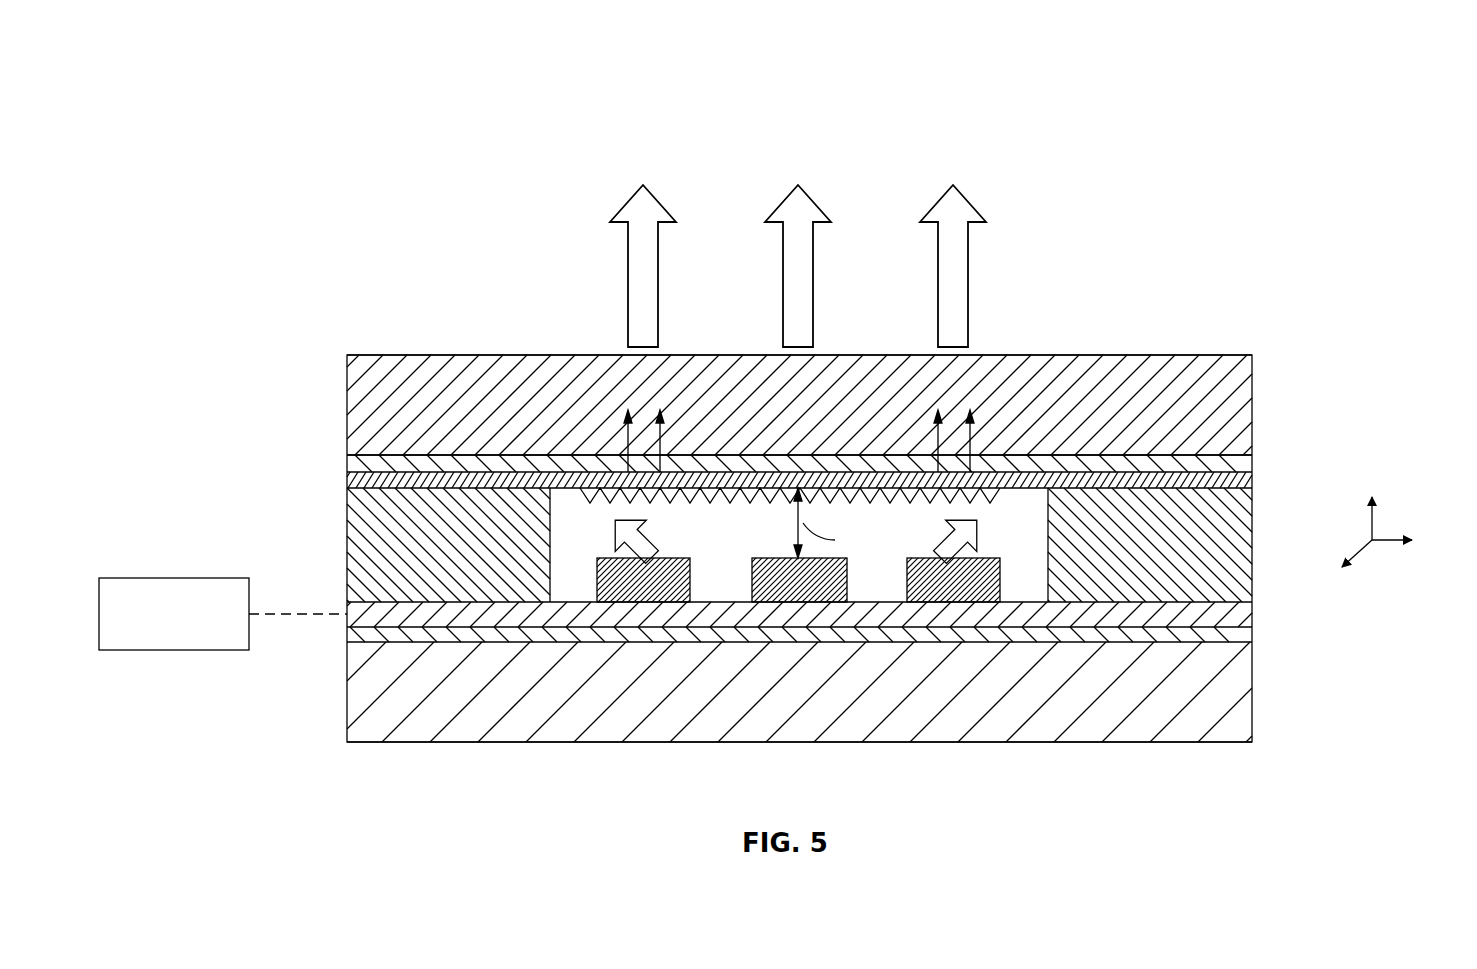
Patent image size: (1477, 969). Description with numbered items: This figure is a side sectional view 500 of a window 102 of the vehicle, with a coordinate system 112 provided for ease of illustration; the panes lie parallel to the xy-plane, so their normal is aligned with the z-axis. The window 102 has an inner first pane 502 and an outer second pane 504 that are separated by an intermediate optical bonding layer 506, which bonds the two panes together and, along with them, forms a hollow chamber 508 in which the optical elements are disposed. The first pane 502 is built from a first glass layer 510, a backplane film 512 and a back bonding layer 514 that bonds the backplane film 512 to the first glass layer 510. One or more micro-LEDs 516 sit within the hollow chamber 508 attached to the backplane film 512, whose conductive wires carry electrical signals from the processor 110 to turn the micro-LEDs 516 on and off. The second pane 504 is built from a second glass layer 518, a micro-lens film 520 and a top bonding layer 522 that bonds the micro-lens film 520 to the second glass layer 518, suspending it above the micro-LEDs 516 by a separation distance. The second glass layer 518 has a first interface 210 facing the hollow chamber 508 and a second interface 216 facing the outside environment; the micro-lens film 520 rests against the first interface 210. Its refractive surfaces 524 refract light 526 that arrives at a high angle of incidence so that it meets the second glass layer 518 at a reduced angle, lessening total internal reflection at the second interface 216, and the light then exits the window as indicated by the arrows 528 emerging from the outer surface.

The side sectional view 500 is at (1340, 182).
The window 102 is at (405, 345).
The processor 110 is at (175, 578).
The coordinate system 112 is at (1395, 470).
The first interface 210 is at (1240, 455).
The second interface 216 is at (1188, 356).
The first pane 502 is at (1263, 602).
The second pane 504 is at (1263, 356).
The intermediate optical bonding layer 506 is at (365, 556).
The hollow chamber 508 is at (1010, 540).
The first glass layer 510 is at (400, 715).
The backplane film 512 is at (352, 610).
The back bonding layer 514 is at (355, 633).
The micro-LEDs 516 is at (955, 593).
The second glass layer 518 is at (347, 397).
The micro-lens film 520 is at (355, 478).
The top bonding layer 522 is at (368, 465).
The refractive surfaces 524 is at (753, 502).
The light 526 is at (655, 532).
The output light arrows 528 is at (628, 265).